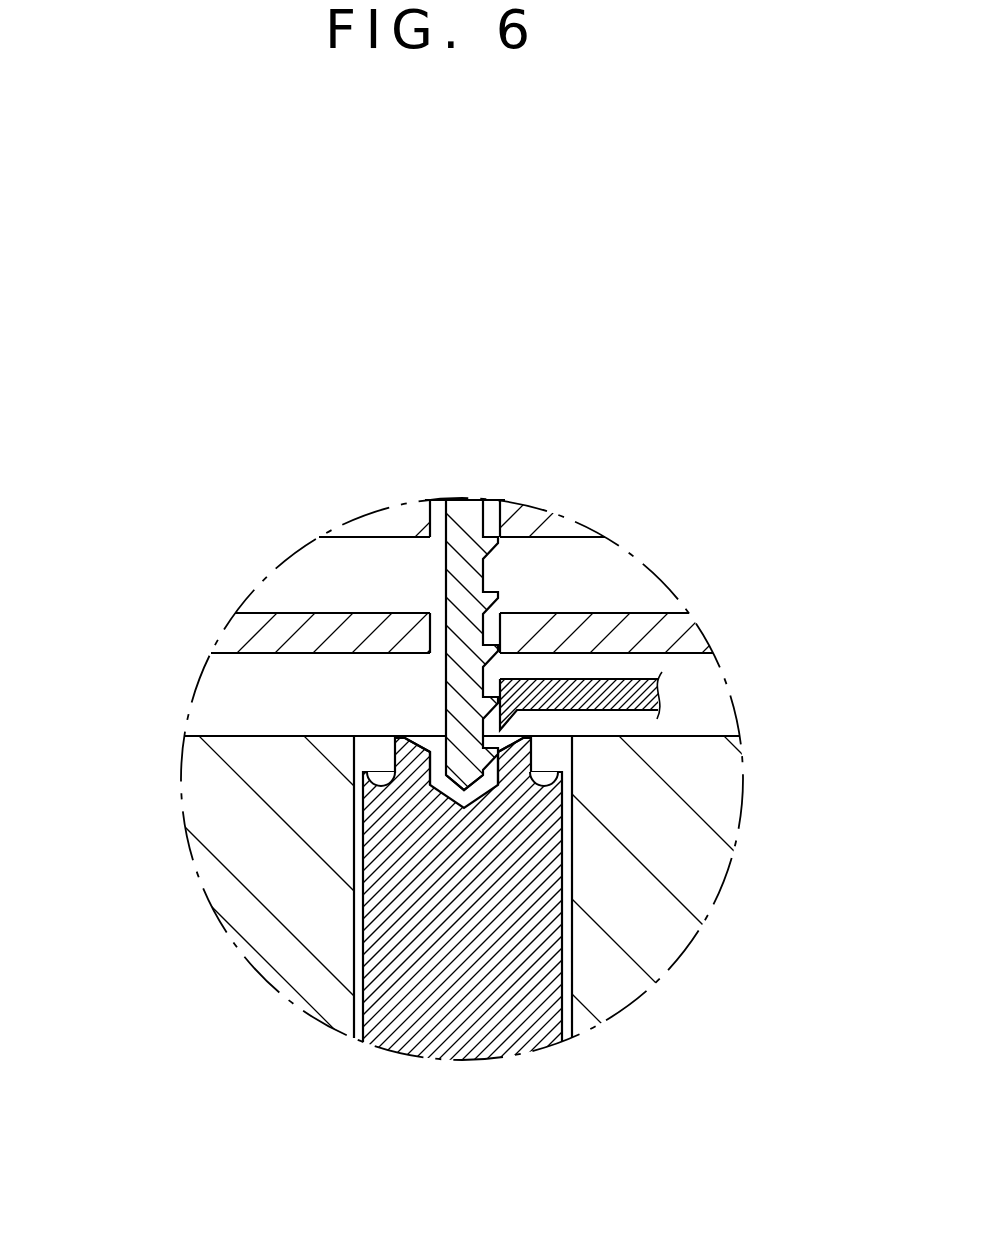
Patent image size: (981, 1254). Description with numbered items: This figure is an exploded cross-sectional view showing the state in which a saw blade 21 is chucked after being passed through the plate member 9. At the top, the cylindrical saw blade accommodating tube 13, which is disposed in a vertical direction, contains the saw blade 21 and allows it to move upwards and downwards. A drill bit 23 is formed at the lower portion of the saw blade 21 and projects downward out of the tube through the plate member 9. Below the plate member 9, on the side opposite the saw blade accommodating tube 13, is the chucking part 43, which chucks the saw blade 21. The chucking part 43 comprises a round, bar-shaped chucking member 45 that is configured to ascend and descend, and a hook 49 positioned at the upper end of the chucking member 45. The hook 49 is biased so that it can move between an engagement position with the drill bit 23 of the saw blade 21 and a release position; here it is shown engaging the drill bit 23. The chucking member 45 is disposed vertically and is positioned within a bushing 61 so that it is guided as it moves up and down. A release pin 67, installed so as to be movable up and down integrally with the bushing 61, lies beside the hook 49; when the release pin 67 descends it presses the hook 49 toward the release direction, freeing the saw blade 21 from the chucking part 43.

The plate member 9 is at (307, 620).
The saw blade accommodating tube 13 is at (385, 512).
The saw blade 21 is at (476, 500).
The drill bit 23 is at (463, 805).
The chucking part 43 is at (502, 750).
The chucking member 45 is at (377, 822).
The hook 49 is at (403, 736).
The bushing 61 is at (700, 865).
The release pin 67 is at (662, 697).